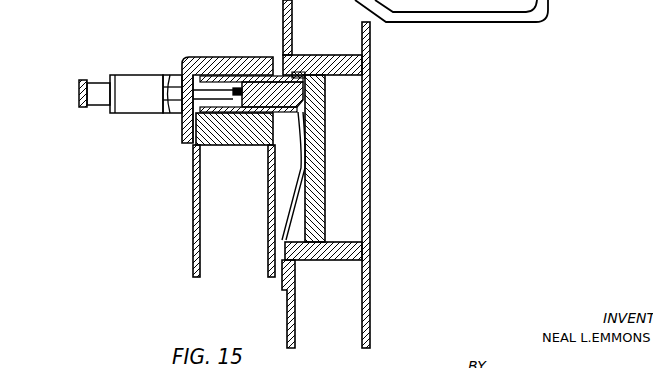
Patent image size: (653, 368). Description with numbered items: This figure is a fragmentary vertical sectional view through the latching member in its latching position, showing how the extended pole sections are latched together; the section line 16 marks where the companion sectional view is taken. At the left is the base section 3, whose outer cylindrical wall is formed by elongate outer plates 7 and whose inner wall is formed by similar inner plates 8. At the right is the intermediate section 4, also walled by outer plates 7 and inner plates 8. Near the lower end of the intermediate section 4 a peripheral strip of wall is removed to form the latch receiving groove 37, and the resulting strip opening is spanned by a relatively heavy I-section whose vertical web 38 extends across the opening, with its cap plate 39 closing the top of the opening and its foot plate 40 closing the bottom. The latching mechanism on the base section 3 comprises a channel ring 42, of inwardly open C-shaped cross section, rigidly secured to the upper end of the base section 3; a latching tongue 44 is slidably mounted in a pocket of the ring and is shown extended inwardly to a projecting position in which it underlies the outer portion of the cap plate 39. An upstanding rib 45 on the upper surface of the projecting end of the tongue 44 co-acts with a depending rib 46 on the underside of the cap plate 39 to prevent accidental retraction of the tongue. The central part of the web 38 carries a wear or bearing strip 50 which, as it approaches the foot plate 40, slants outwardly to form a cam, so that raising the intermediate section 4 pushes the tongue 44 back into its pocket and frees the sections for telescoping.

The section line 16— 16 is at (275, 43).
The channel ring 42 is at (210, 53).
The latching tongue 44 is at (270, 90).
The latch receiving groove 37 is at (293, 146).
The outer plate 7 is at (290, 305).
The inner plate 8 is at (268, 212).
The upstanding rib 45 is at (308, 68).
The I-section web 38 is at (320, 153).
The depending rib 46 is at (293, 72).
The cap plate 39 is at (355, 70).
The foot plate 40 is at (328, 245).
The wear or bearing strip 50 is at (299, 184).
The base section 3 is at (186, 242).
The intermediate section 4 is at (377, 185).